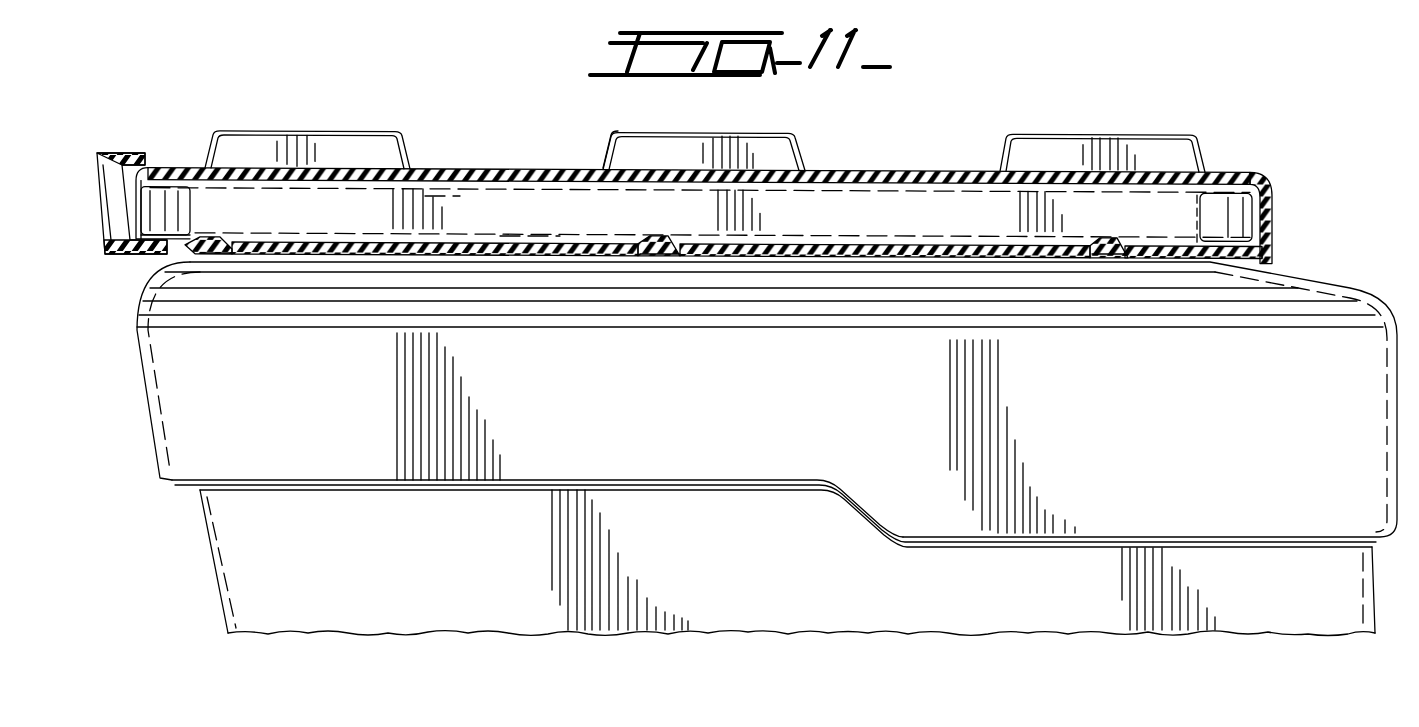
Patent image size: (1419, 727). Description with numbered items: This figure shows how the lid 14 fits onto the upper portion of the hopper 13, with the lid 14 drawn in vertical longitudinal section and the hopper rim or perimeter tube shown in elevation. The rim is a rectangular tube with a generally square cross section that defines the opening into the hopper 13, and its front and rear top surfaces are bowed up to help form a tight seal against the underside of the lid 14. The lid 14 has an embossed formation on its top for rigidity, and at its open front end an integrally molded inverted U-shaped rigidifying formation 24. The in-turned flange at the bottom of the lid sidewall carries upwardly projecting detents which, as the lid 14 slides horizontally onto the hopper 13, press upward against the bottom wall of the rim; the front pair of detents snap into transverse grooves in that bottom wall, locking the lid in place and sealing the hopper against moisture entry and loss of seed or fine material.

The hopper 13 is at (1320, 283).
The lid 14 is at (704, 179).
The inverted U-shaped rigidifying formation 24 is at (126, 151).